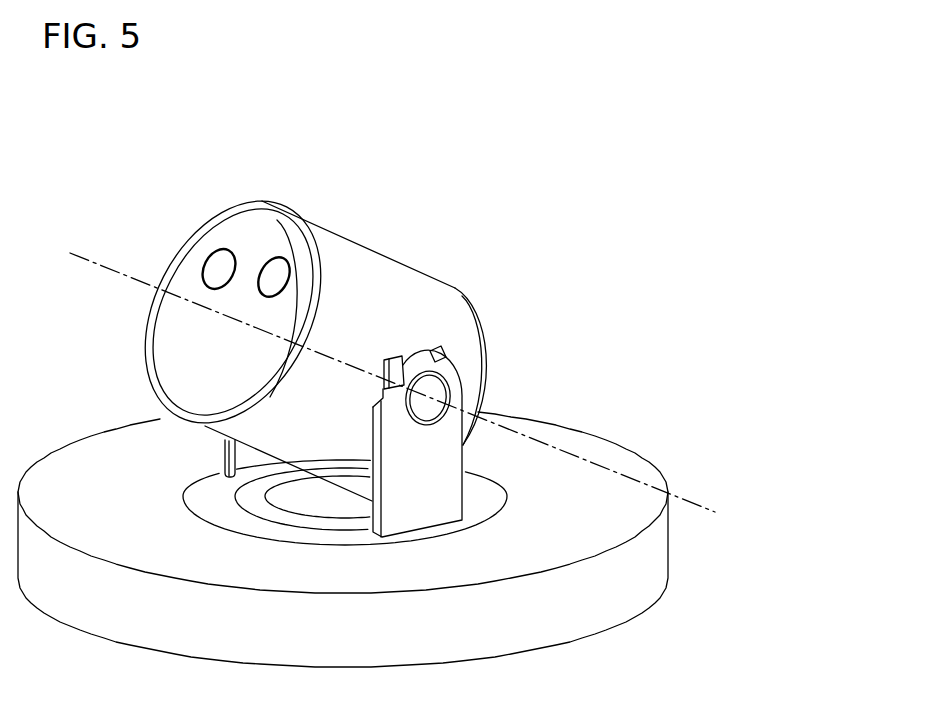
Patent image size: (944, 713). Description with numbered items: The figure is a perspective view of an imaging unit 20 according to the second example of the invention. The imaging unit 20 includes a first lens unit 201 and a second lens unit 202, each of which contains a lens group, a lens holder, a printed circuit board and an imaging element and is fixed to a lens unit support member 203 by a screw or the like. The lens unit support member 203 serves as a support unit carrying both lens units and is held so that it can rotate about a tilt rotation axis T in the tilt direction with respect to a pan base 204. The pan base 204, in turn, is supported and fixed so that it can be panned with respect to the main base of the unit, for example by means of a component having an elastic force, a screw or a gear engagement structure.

The imaging unit 20 is at (783, 63).
The first lens unit 201 is at (206, 264).
The second lens unit 202 is at (280, 257).
The lens unit support member 203 is at (244, 203).
The pan base 204 is at (445, 460).
The tilt rotation axis T is at (405, 390).